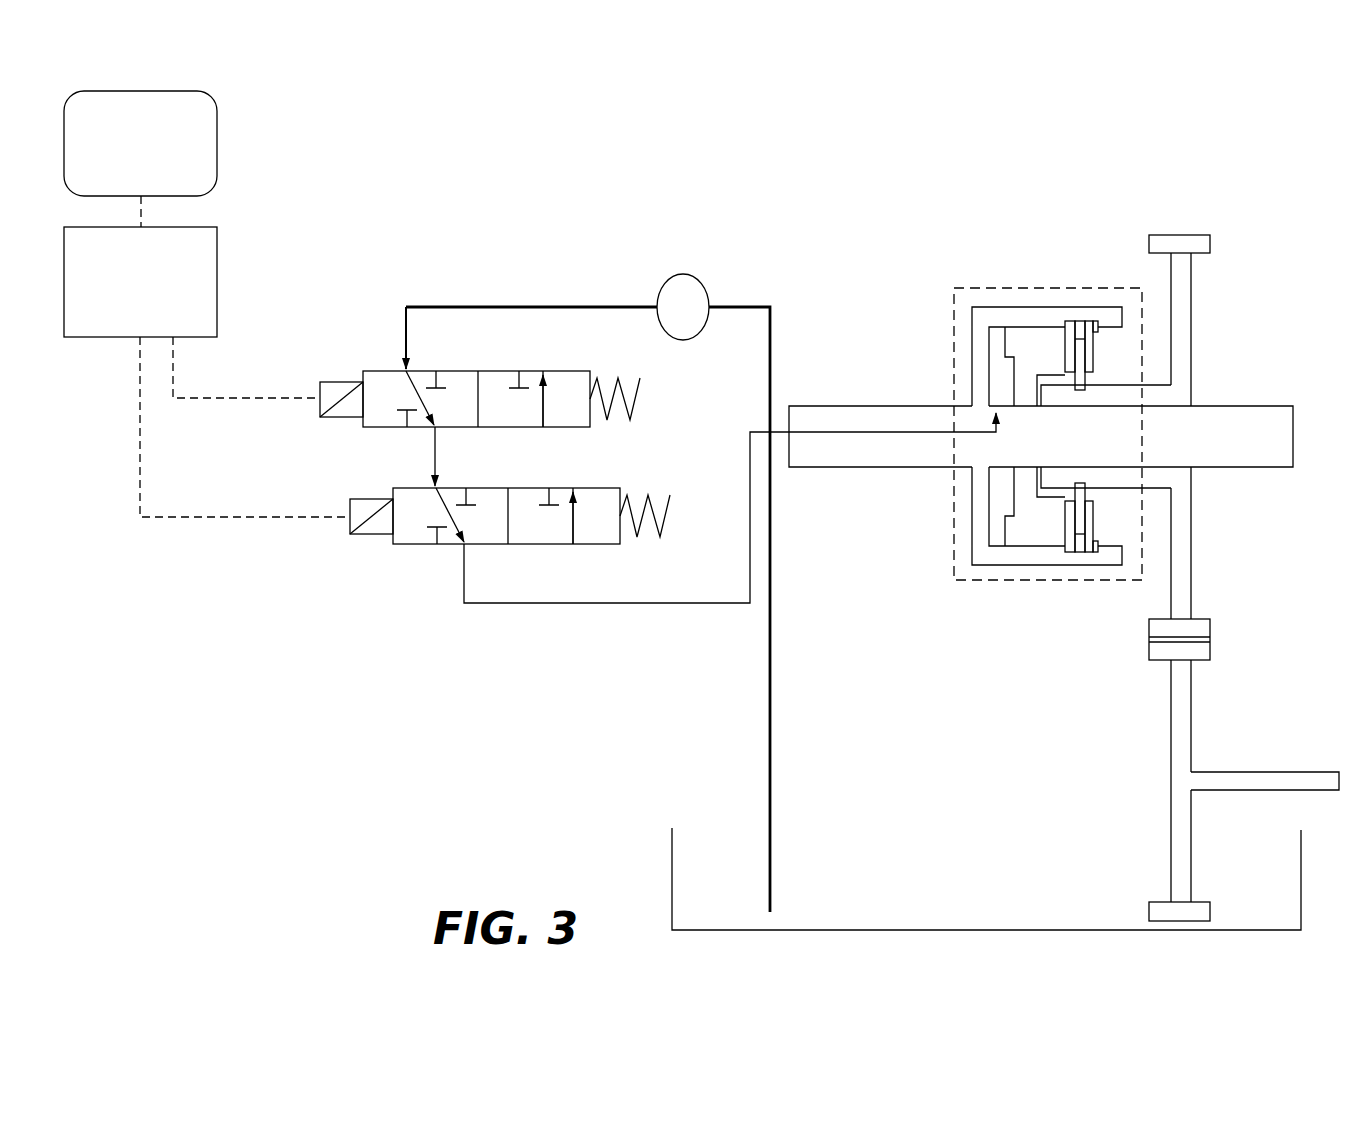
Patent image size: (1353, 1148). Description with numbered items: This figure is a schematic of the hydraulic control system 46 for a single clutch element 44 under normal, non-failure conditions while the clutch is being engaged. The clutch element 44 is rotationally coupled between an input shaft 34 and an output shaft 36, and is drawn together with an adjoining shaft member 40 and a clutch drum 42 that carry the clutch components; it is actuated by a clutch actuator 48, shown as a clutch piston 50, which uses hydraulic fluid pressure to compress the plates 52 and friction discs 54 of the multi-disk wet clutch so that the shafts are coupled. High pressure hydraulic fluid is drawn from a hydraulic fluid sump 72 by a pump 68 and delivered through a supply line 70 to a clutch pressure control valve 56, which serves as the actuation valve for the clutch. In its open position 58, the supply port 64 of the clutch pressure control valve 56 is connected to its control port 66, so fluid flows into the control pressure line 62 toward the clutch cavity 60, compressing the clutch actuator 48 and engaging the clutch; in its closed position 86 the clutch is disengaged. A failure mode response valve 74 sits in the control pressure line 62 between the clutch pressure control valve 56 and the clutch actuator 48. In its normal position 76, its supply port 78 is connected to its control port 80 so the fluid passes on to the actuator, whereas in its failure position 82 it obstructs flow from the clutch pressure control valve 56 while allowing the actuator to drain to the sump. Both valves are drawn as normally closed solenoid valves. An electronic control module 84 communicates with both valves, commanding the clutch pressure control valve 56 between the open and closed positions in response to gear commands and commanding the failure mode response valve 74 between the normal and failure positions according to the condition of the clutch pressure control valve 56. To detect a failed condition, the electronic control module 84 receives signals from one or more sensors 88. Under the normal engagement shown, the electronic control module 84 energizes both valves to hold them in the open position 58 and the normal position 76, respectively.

The input shaft 34 is at (880, 406).
The output shaft 36 is at (1265, 772).
The output shaft 40 is at (1250, 420).
The clutch drum 42 is at (1182, 313).
The clutch element 44 is at (1102, 523).
The hydraulic control system 46 is at (812, 112).
The clutch actuator 48 is at (1020, 307).
The clutch piston 50 is at (1043, 310).
The plates 52 is at (1070, 553).
The friction discs 54 is at (1081, 553).
The clutch pressure control valve 56 is at (468, 385).
The open position 58 is at (443, 371).
The clutch cavity 60 is at (1002, 370).
The control pressure line 62 is at (437, 448).
The supply port 64 is at (403, 366).
The control port 66 is at (432, 428).
The pump 68 is at (683, 274).
The supply line 70 is at (767, 304).
The hydraulic fluid sump 72 is at (672, 880).
The failure mode response valve 74 is at (491, 543).
The normal position 76 is at (430, 546).
The supply port 78 is at (438, 488).
The control port 80 is at (465, 546).
The failure position 82 is at (588, 546).
The electronic control module 84 is at (217, 296).
The closed position 86 is at (527, 371).
The sensors 88 is at (217, 144).